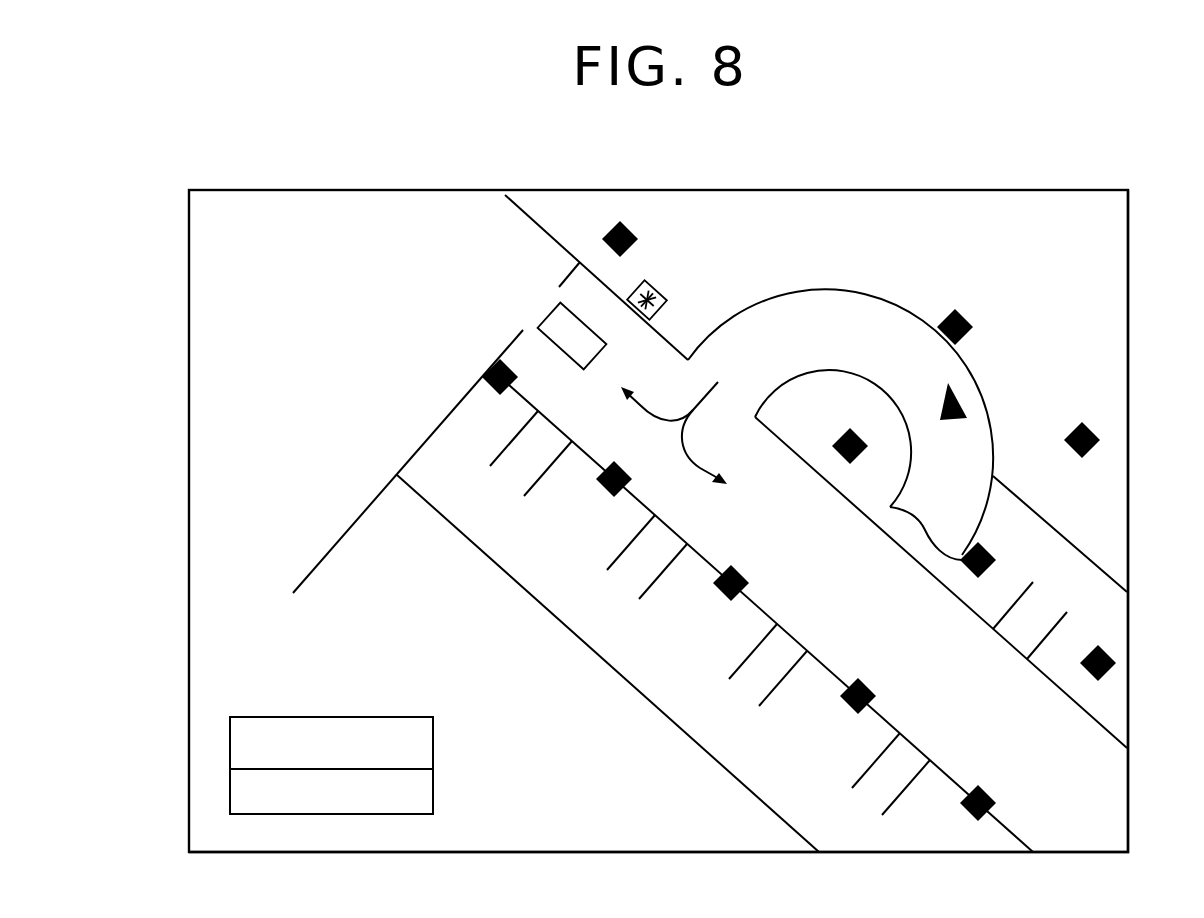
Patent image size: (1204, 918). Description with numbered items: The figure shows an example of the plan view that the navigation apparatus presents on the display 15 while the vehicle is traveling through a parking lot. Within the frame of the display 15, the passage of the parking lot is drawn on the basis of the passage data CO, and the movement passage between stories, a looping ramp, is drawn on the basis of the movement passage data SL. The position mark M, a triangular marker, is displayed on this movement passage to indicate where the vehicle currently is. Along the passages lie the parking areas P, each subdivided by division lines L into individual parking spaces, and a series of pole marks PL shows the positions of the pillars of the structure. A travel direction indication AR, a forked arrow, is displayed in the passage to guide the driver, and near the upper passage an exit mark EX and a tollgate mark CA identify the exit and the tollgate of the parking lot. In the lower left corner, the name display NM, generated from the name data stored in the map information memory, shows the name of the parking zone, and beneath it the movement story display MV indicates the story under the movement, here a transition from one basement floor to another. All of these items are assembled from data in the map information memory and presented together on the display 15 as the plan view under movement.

The display 15 is at (1128, 264).
The passage data CO is at (1108, 778).
The movement passage data SL is at (840, 291).
The parking area P is at (689, 655).
The division line L is at (773, 697).
The pole mark PL is at (1070, 428).
The position mark M is at (955, 423).
The travel direction indication AR is at (697, 412).
The exit mark EX is at (547, 318).
The tollgate mark CA is at (655, 292).
The name display NM is at (230, 745).
The movement story display MV is at (230, 792).